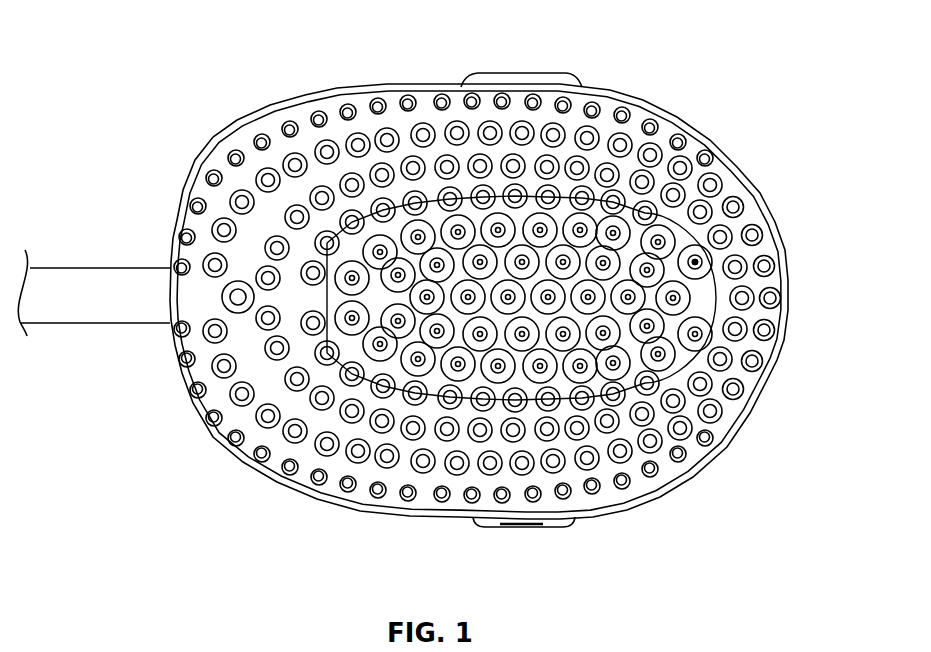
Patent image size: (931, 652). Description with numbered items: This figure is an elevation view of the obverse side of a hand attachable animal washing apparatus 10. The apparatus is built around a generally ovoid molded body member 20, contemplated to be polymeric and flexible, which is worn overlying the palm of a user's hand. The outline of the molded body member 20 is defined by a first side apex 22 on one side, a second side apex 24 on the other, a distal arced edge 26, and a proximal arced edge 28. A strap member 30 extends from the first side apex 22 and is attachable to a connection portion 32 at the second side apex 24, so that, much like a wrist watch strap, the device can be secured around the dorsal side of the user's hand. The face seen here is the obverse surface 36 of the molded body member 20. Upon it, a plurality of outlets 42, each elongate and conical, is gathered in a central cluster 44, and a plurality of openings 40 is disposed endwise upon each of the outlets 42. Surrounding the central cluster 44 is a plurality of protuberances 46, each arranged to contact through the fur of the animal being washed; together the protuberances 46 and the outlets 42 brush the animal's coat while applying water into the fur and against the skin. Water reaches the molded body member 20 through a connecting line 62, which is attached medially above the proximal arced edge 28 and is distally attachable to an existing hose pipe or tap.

The hand attachable animal washing apparatus 10 is at (781, 98).
The molded body member 20 is at (668, 91).
The first side apex 22 is at (476, 527).
The second side apex 24 is at (494, 73).
The distal arced edge 26 is at (790, 270).
The proximal arced edge 28 is at (170, 252).
The strap member 30 is at (568, 528).
The connection portion 32 is at (563, 73).
The obverse surface 36 is at (698, 380).
The plurality of openings 40 is at (697, 262).
The plurality of outlets 42 is at (645, 213).
The central cluster 44 is at (667, 326).
The plurality of protuberances 46 is at (330, 140).
The connecting line 62 is at (93, 305).